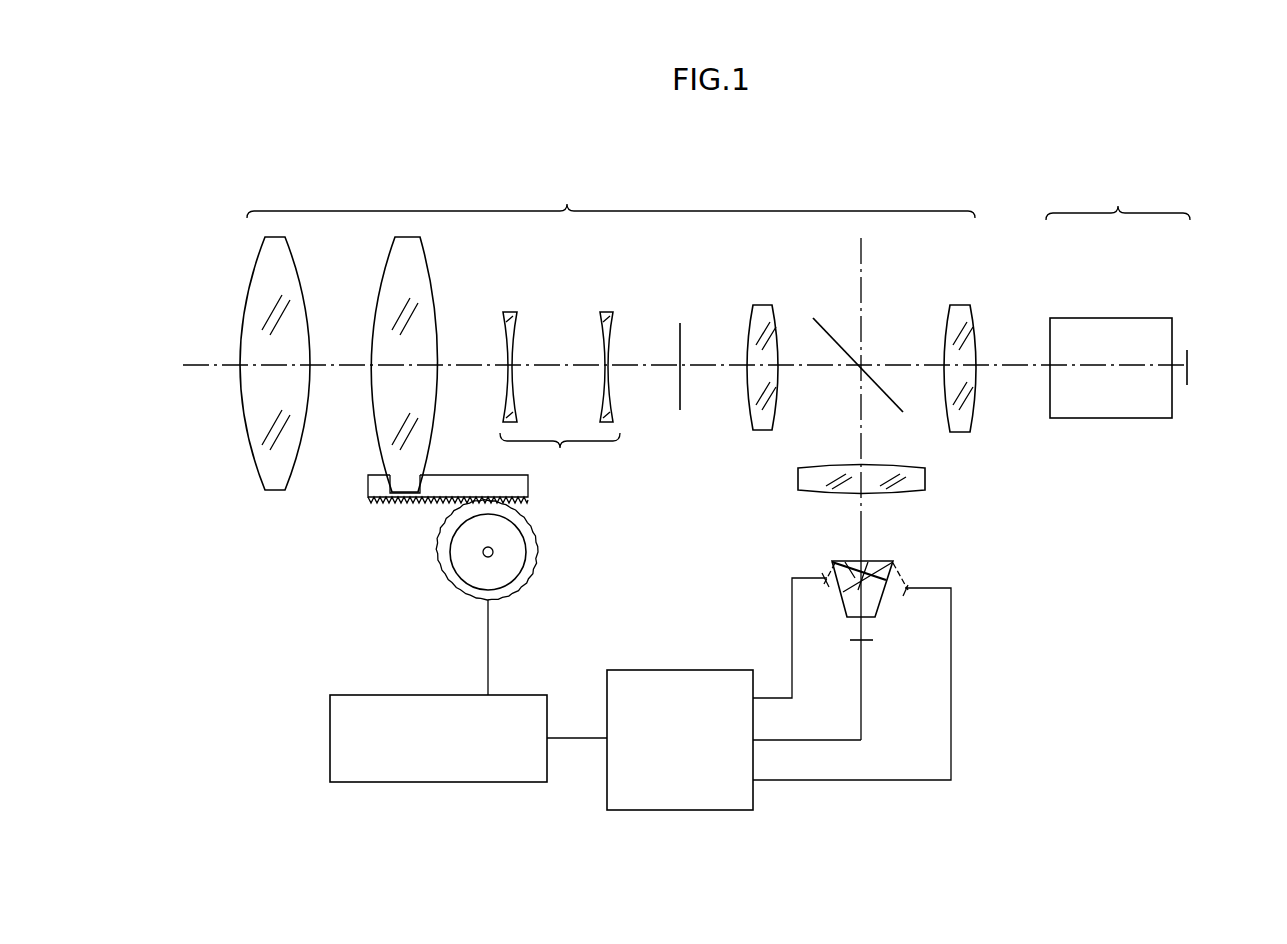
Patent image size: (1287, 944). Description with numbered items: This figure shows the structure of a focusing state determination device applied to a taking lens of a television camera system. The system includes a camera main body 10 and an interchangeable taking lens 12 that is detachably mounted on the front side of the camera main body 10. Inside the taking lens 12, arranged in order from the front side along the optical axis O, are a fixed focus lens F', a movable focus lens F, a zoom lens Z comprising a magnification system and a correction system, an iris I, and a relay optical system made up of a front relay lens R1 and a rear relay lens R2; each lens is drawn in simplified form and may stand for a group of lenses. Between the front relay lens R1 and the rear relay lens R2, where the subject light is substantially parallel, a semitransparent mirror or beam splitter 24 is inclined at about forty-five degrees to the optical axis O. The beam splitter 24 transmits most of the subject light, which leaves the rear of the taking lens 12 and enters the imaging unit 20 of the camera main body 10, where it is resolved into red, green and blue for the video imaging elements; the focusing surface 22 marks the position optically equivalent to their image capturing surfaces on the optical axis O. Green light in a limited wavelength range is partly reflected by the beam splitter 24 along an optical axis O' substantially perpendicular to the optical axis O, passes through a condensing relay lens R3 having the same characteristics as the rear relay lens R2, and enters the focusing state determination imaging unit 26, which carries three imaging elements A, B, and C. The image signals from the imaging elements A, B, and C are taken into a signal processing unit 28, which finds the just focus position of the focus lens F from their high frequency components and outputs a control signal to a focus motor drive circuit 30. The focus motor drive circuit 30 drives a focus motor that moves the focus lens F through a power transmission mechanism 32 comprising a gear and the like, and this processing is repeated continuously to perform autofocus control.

The camera main body 10 is at (1118, 186).
The taking lens 12 is at (611, 196).
The imaging unit 20 is at (1163, 418).
The focusing surface 22 is at (1189, 376).
The beam splitter 24 is at (848, 348).
The focusing state determination imaging unit 26 is at (887, 563).
The signal processing unit 28 is at (669, 676).
The focus motor drive circuit 30 is at (467, 782).
The power transmission mechanism 32 is at (408, 556).
The optical axis O is at (200, 325).
The optical axis O' is at (810, 519).
The movable focus lens F is at (383, 367).
The fixed focus lens F' is at (275, 392).
The zoom lens Z is at (560, 397).
The iris I is at (680, 392).
The front relay lens R1 is at (758, 306).
The rear relay lens R2 is at (958, 306).
The relay lens R3 is at (922, 476).
The imaging element A is at (869, 640).
The imaging element B is at (827, 578).
The imaging element C is at (912, 585).